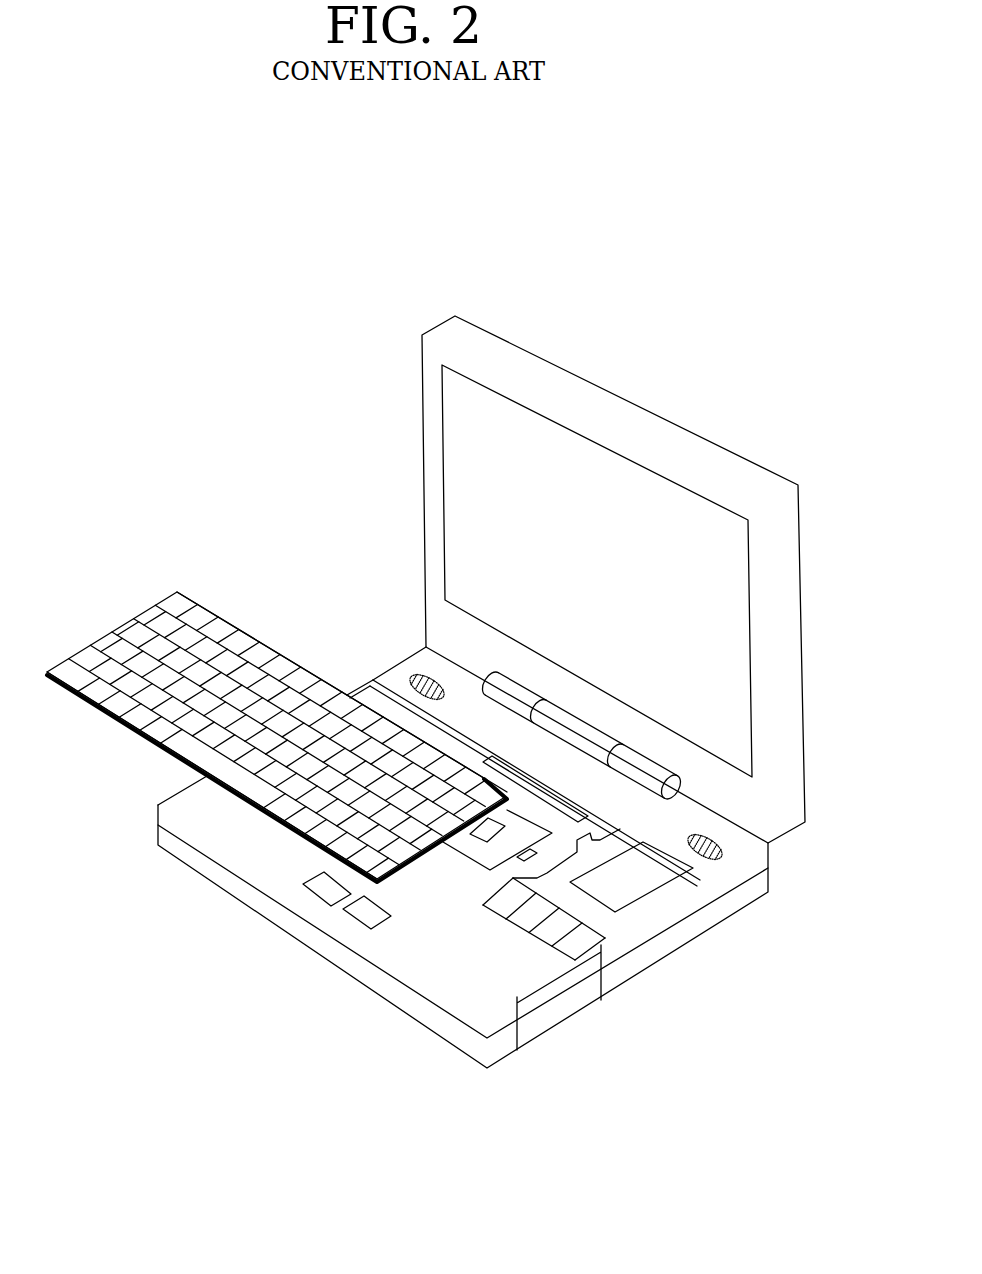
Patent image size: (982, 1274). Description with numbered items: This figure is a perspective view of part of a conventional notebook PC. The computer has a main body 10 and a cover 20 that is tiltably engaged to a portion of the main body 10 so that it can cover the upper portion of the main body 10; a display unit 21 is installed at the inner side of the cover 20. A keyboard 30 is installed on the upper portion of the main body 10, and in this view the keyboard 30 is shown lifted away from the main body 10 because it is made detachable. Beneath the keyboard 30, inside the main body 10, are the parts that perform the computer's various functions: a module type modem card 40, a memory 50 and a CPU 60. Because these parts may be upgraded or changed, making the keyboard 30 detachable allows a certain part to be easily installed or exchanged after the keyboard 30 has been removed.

The main body 10 is at (555, 1015).
The cover 20 is at (793, 663).
The display unit 21 is at (452, 468).
The keyboard 30 is at (202, 613).
The module type modem card 40 is at (670, 903).
The memory 50 is at (608, 953).
The CPU 60 is at (480, 857).